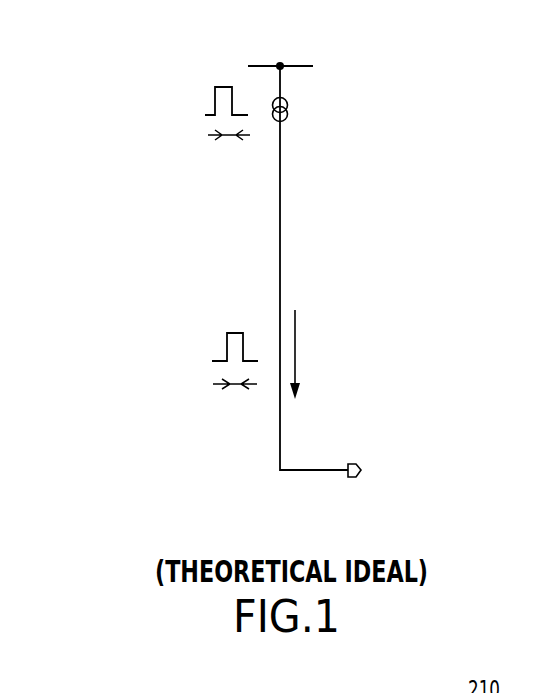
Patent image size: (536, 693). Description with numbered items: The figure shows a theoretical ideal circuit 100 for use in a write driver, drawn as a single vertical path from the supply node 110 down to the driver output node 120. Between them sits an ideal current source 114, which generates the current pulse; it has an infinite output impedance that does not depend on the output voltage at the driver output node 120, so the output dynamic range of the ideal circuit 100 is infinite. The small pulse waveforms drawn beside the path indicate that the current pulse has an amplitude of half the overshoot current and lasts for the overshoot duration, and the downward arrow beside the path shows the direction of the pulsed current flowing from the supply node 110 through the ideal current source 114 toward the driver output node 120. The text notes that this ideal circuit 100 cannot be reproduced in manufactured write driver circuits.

The theoretical ideal circuit 100 is at (132, 87).
The supply node VCC 110 is at (282, 67).
The ideal current source 114 is at (329, 121).
The driver output node 120 is at (354, 478).